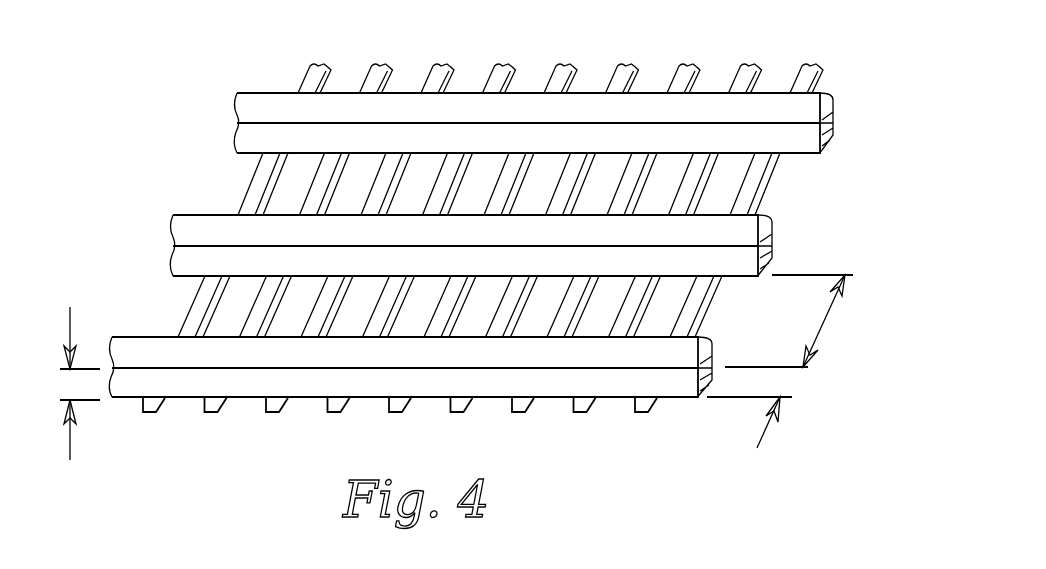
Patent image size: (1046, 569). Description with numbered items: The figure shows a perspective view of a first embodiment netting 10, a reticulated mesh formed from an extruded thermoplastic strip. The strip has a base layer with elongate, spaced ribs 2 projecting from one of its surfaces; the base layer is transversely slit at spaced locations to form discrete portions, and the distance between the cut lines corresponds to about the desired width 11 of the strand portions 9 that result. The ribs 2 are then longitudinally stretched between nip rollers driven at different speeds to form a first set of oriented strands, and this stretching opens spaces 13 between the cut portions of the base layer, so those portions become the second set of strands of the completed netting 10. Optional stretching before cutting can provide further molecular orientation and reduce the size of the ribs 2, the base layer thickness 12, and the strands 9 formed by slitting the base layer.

The netting 10 is at (783, 58).
The strand portions 9 is at (759, 221).
The ribs 2 is at (149, 405).
The base layer thickness 12 is at (70, 320).
The spaces 13 is at (826, 321).
The width 11 is at (767, 433).